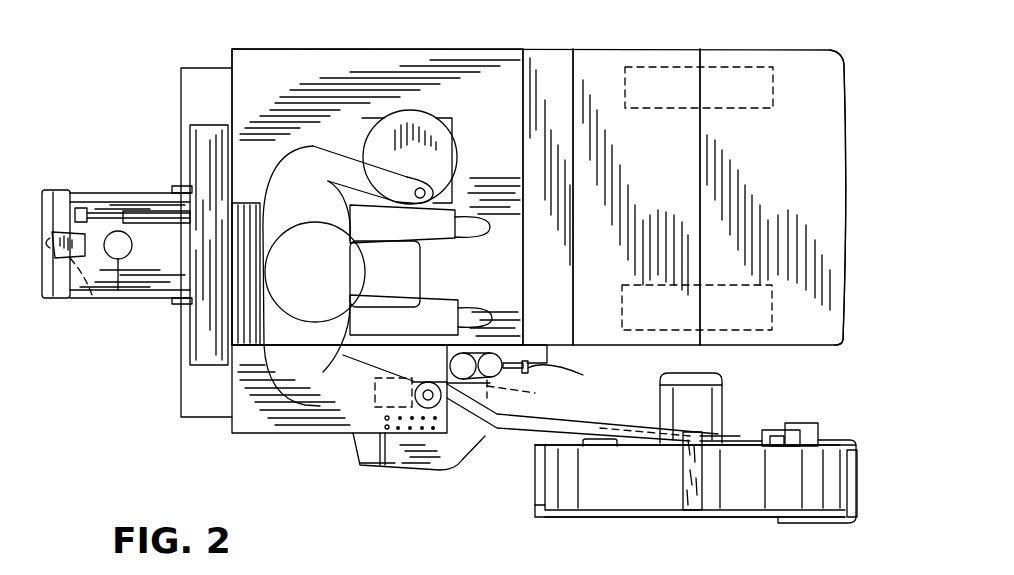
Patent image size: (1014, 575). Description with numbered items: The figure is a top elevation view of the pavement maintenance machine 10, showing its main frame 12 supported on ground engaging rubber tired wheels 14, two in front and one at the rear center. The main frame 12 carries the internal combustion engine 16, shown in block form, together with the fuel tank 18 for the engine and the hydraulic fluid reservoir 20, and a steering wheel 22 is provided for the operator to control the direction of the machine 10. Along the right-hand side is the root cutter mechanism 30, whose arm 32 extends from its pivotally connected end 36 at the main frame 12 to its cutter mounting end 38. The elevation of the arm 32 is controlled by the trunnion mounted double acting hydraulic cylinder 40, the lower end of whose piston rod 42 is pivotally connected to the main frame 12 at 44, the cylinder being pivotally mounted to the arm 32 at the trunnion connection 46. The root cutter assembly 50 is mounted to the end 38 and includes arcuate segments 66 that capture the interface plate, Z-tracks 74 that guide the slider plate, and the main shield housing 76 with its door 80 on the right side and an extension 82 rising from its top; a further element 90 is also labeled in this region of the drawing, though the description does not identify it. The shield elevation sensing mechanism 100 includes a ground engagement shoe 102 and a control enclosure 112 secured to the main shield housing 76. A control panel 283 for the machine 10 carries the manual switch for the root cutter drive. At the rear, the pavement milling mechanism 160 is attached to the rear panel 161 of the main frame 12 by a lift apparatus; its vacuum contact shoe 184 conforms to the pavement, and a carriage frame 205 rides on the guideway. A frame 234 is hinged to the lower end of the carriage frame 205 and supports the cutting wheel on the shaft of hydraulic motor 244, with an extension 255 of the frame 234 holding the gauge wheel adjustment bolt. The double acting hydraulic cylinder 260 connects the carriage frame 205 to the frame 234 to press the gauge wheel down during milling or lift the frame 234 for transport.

The pavement maintenance machine 10 is at (186, 45).
The main frame 12 is at (280, 49).
The ground engaging rubber tired wheels 14 is at (675, 67).
The internal combustion engine 16 is at (592, 60).
The fuel tank 18 is at (548, 60).
The hydraulic fluid reservoir 20 is at (740, 58).
The steering wheel 22 is at (462, 150).
The root cutter mechanism 30 is at (875, 367).
The arm 32 is at (490, 430).
The pivotally connected end 36 is at (378, 468).
The cutter mounting end 38 is at (715, 385).
The double acting hydraulic cylinder 40 is at (478, 345).
The piston rod 42 is at (583, 374).
The pivotal connection of piston rod to main frame 44 is at (548, 374).
The trunnion connection 46 is at (535, 394).
The root cutter assembly 50 is at (530, 487).
The arcuate segments 66 is at (720, 440).
The Z-tracks 74 is at (592, 444).
The main shield housing 76 is at (847, 480).
The door 80 is at (655, 518).
The extension 82 is at (686, 452).
The lever 90 is at (640, 428).
The shield elevation sensing mechanism 100 is at (797, 414).
The ground engagement shoe 102 is at (843, 437).
The control enclosure 112 is at (833, 425).
The pavement milling mechanism 160 is at (123, 135).
The rear panel 161 is at (230, 425).
The vacuum contact shoe 184 is at (181, 398).
The carriage frame 205 is at (40, 200).
The frame 234 is at (103, 300).
The hydraulic motor 244 is at (120, 298).
The extension 255 is at (90, 298).
The hydraulic cylinder 260 is at (190, 225).
The control panel 283 is at (432, 432).